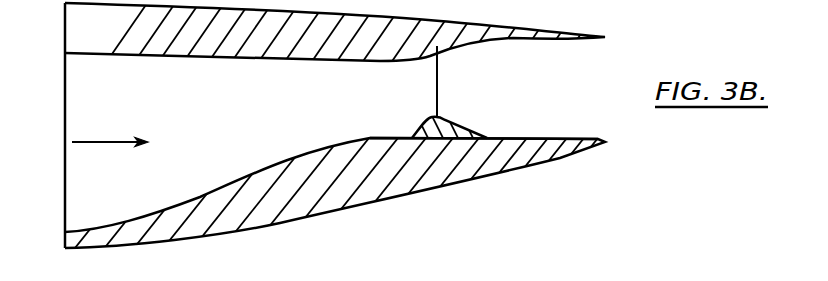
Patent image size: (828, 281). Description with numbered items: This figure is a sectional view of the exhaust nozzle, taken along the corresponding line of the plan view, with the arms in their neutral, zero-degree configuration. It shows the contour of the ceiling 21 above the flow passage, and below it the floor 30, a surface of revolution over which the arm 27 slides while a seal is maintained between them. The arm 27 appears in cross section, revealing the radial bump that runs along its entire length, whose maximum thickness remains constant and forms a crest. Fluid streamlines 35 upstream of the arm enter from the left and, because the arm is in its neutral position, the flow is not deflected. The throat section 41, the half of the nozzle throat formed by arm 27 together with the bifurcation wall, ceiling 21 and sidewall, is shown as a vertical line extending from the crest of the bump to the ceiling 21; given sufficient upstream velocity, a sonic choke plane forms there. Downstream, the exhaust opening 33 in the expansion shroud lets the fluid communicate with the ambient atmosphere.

The ceiling 21 is at (597, 43).
The arm 27 is at (457, 125).
The floor 30 is at (504, 138).
The exhaust opening 33 is at (605, 100).
The fluid streamlines 35 is at (95, 141).
The throat section 41 is at (436, 82).